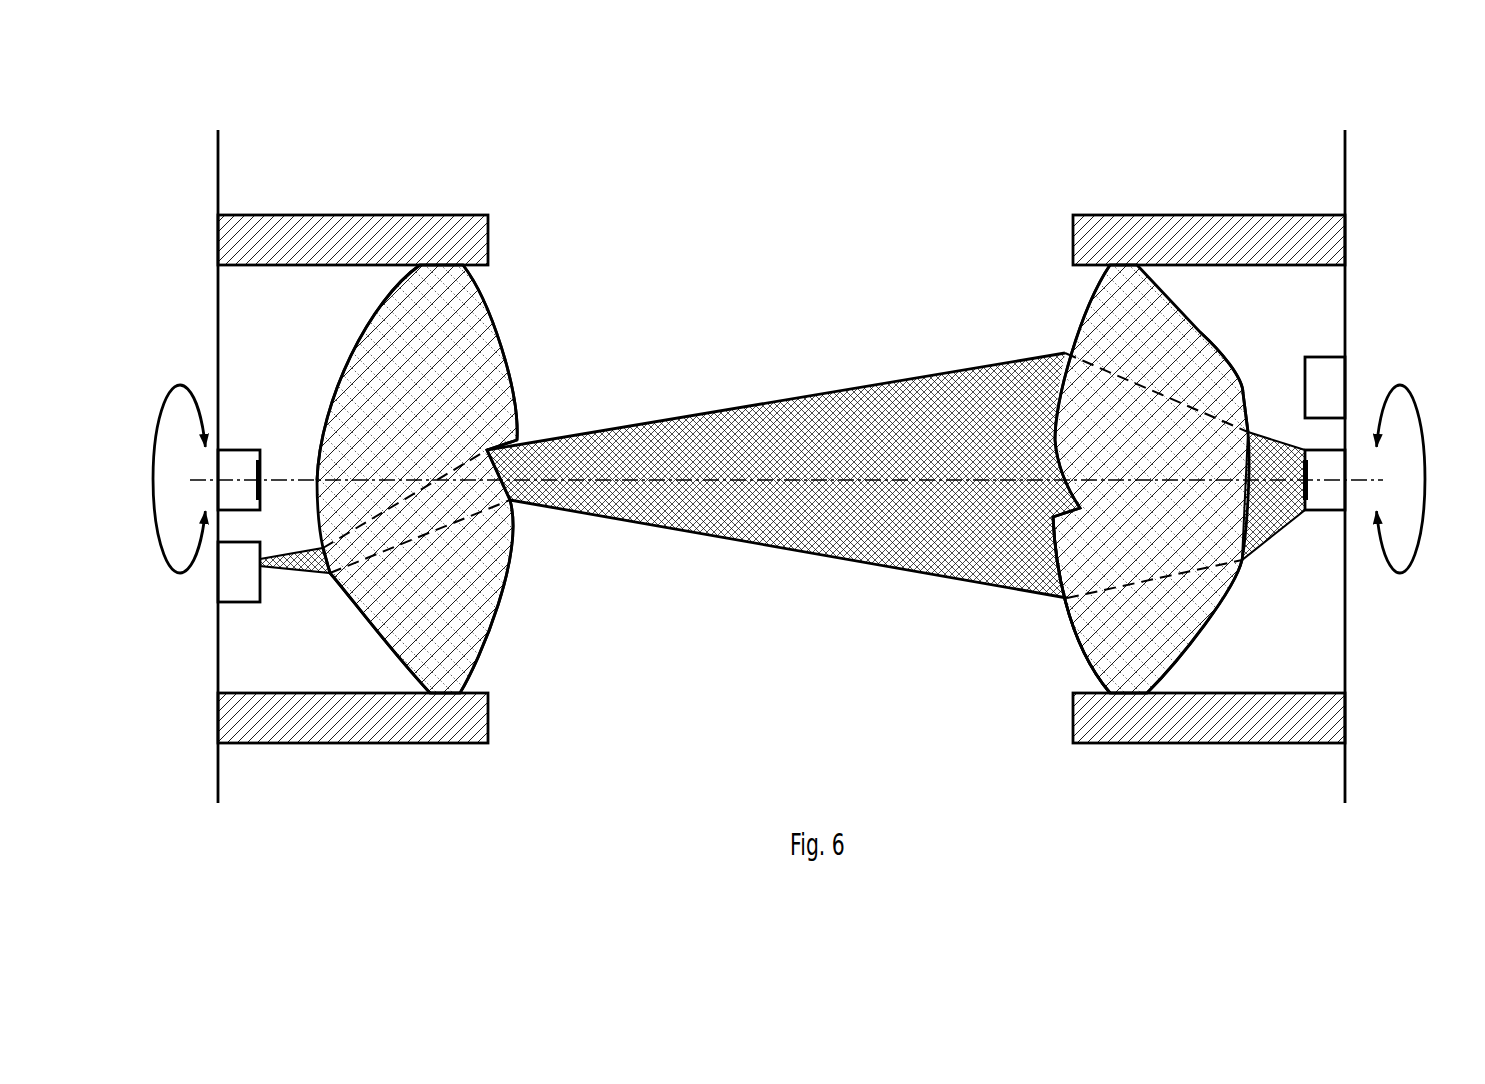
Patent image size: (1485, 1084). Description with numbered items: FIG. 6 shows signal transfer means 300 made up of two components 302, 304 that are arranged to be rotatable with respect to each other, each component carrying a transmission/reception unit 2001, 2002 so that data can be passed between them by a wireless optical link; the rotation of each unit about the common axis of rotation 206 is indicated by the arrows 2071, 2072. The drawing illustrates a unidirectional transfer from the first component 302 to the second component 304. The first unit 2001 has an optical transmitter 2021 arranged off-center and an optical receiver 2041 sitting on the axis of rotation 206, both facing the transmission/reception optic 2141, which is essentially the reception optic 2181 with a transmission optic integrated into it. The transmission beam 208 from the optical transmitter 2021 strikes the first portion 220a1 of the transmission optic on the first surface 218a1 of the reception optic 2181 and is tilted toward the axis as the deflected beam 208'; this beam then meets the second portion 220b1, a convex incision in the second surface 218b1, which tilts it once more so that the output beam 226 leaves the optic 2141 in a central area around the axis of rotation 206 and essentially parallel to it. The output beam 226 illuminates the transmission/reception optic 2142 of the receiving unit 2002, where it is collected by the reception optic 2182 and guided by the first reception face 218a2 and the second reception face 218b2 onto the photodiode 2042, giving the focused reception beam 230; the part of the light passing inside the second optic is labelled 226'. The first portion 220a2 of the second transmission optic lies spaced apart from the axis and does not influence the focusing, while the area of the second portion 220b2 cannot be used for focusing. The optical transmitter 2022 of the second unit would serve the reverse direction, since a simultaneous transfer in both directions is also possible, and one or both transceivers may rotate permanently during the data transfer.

The signal transfer means 300 is at (193, 102).
The first component 302 is at (215, 317).
The second component 304 is at (1358, 678).
The first transmission/reception unit 2001 is at (205, 247).
The second transmission/reception unit 2002 is at (1358, 247).
The optical transmitter of first unit 2021 is at (240, 603).
The optical transmitter of second unit 2022 is at (1325, 357).
The optical receiver of first unit 2041 is at (240, 450).
The optical receiver of second unit 2042 is at (1320, 512).
The axis of rotation 206 is at (697, 477).
The rotation arrow of first unit 2071 is at (178, 575).
The rotation arrow of second unit 2072 is at (1400, 575).
The transmission beam 208 is at (295, 600).
The deflected beam 208' is at (457, 561).
The transmission/reception optic of first unit 2141 is at (492, 655).
The transmission/reception optic of second unit 2142 is at (1073, 630).
The reception optic of first unit 2181 is at (490, 357).
The reception optic of second unit 2182 is at (1108, 312).
The first surface of first reception optic 218a1 is at (358, 340).
The second surface of first reception optic 218b1 is at (497, 313).
The first reception face of second reception optic 218a2 is at (1200, 633).
The second reception face of second reception optic 218b2 is at (1082, 655).
The first portion of transmission optic 220a1 is at (337, 577).
The second portion of transmission optic 220b1 is at (500, 493).
The first portion of second transmission optic 220a2 is at (1243, 387).
The second portion of second transmission optic 220b2 is at (1067, 467).
The output beam 226 is at (788, 569).
The light beam inside second lens 226' is at (1156, 434).
The reception beam 230 is at (1265, 545).